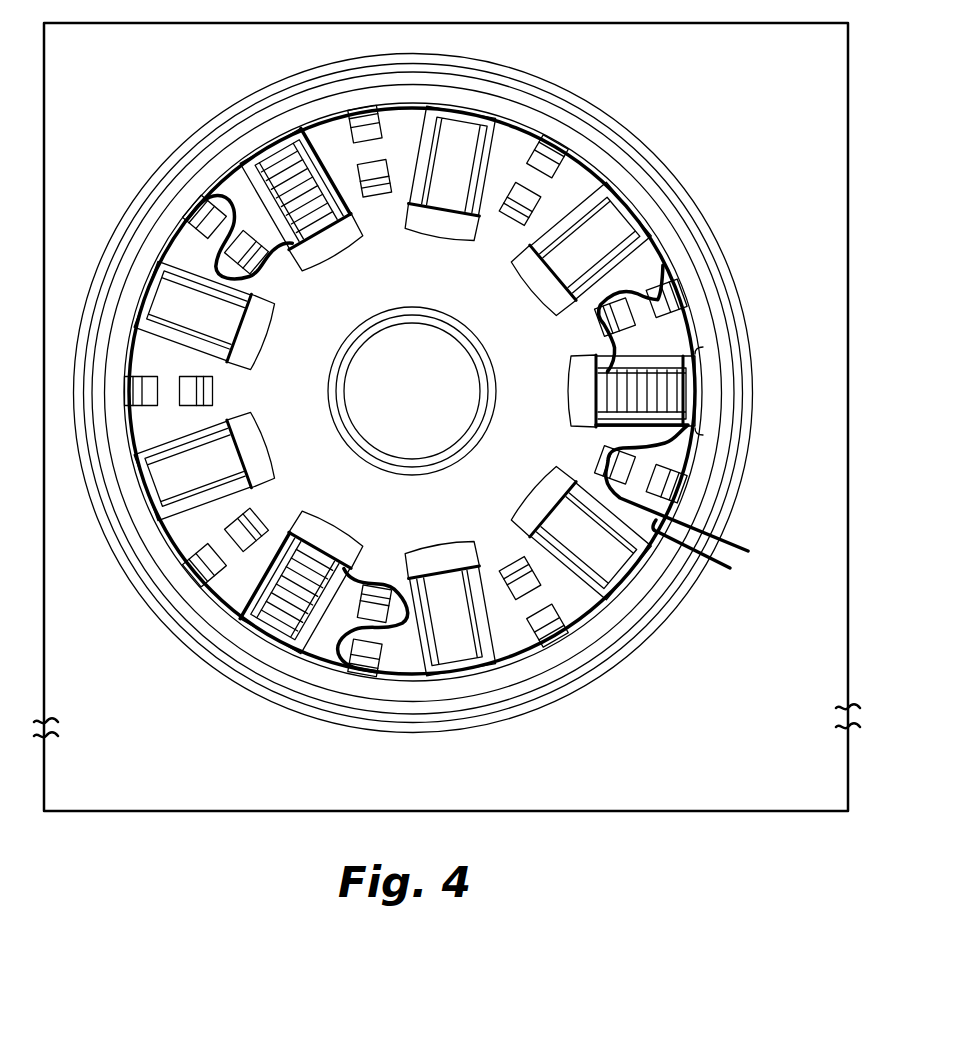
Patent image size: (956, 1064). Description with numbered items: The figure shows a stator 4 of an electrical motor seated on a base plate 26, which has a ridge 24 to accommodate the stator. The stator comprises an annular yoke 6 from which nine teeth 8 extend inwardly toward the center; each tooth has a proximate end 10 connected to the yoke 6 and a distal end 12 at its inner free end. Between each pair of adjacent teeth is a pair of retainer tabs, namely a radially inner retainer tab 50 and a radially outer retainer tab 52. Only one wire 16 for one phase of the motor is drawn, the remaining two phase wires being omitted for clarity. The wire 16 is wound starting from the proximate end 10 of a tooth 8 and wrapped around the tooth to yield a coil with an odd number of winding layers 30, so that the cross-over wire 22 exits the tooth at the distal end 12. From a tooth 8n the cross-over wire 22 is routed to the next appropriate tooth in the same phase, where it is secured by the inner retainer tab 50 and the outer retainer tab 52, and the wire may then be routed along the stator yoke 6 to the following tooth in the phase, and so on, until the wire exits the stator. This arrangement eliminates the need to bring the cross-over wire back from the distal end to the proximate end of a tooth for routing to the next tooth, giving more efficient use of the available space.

The stator 4 is at (162, 96).
The yoke 6 is at (621, 607).
The tooth 8 is at (595, 385).
The tooth 8n is at (670, 394).
The proximate end 10 is at (240, 452).
The distal end 12 is at (170, 513).
The wire 16 is at (706, 315).
The cross-over wire 22 is at (214, 388).
The ridge 24 is at (130, 218).
The base plate 26 is at (287, 789).
The winding layers 30 is at (664, 387).
The inner retainer tab 50 is at (600, 318).
The outer retainer tab 52 is at (353, 128).